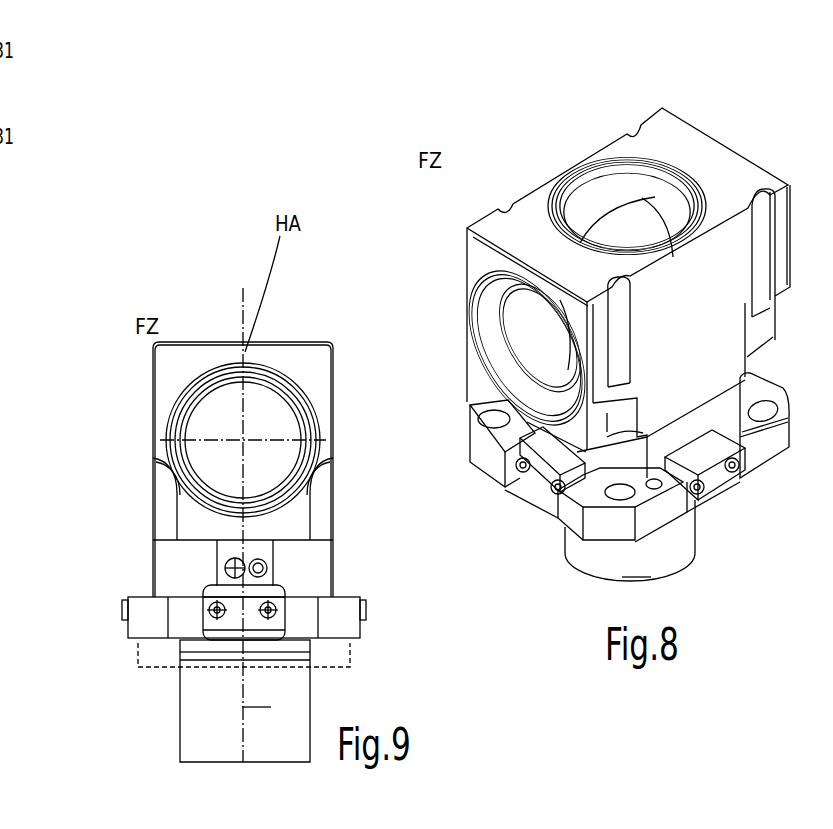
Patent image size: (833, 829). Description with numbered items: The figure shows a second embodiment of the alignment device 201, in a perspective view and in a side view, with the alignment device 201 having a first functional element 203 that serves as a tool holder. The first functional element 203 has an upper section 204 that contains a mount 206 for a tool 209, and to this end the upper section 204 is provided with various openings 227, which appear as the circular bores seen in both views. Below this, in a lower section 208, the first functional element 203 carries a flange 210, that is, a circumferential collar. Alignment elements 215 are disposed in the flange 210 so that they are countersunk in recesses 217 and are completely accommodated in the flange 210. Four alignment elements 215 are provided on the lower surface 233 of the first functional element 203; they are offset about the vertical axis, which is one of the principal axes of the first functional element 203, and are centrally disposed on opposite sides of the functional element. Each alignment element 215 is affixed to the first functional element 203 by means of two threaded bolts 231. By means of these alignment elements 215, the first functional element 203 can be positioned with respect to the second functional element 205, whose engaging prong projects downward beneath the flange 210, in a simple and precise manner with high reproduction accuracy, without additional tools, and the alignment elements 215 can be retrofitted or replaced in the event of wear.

In FIG. 9, the alignment device 201 is at (254, 476).
In FIG. 8, the alignment device 201 is at (582, 328).
In FIG. 9, the first functional element 203 is at (342, 369).
In FIG. 8, the first functional element 203 is at (453, 240).
In FIG. 9, the upper section 204 is at (334, 412).
In FIG. 8, the upper section 204 is at (470, 276).
In FIG. 9, the second functional element 205 is at (350, 660).
In FIG. 8, the second functional element 205 is at (700, 518).
In FIG. 9, the mount 206 is at (187, 408).
In FIG. 8, the mount 206 is at (502, 309).
In FIG. 9, the lower section 208 is at (335, 573).
In FIG. 8, the lower section 208 is at (577, 522).
In FIG. 9, the tool 209 is at (220, 463).
In FIG. 9, the flange 210 is at (361, 625).
In FIG. 8, the flange 210 is at (572, 528).
In FIG. 9, the alignment elements 215 is at (235, 622).
In FIG. 8, the alignment elements 215 is at (538, 481).
In FIG. 9, the recesses 217 is at (213, 592).
In FIG. 8, the recesses 217 is at (512, 474).
In FIG. 9, the openings 227 is at (220, 385).
In FIG. 8, the openings 227 is at (570, 188).
In FIG. 8, the threaded bolts 231 is at (518, 484).
In FIG. 9, the lower surface 233 is at (133, 643).